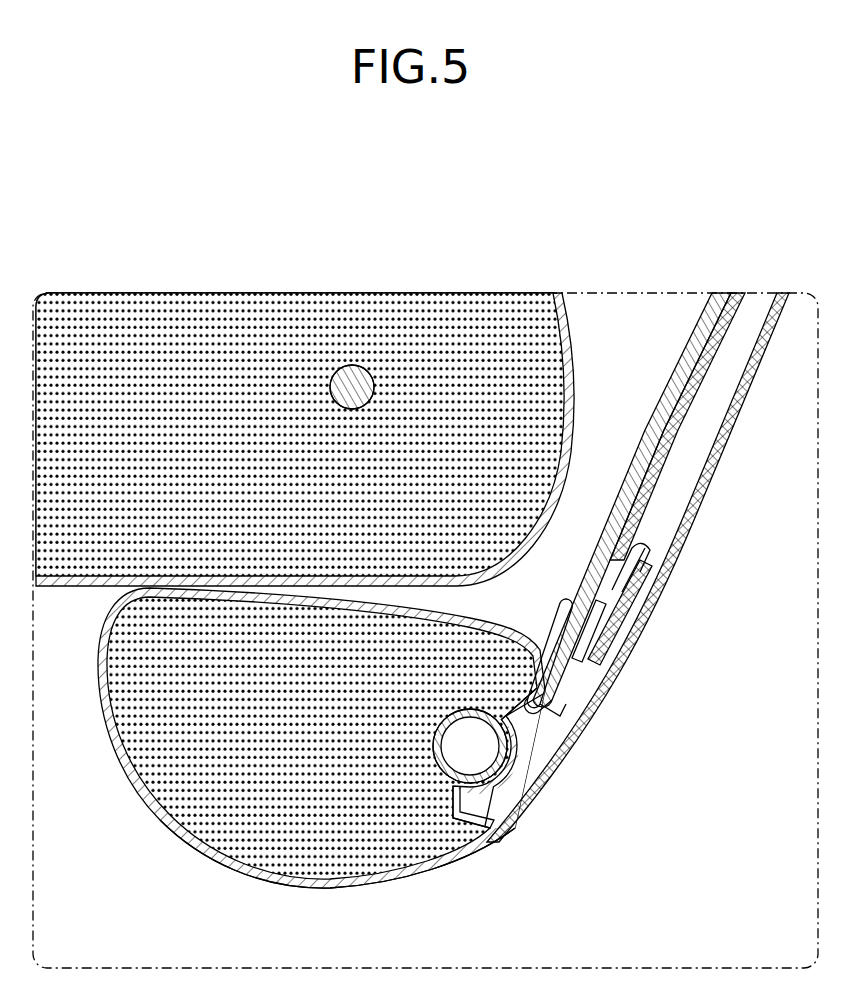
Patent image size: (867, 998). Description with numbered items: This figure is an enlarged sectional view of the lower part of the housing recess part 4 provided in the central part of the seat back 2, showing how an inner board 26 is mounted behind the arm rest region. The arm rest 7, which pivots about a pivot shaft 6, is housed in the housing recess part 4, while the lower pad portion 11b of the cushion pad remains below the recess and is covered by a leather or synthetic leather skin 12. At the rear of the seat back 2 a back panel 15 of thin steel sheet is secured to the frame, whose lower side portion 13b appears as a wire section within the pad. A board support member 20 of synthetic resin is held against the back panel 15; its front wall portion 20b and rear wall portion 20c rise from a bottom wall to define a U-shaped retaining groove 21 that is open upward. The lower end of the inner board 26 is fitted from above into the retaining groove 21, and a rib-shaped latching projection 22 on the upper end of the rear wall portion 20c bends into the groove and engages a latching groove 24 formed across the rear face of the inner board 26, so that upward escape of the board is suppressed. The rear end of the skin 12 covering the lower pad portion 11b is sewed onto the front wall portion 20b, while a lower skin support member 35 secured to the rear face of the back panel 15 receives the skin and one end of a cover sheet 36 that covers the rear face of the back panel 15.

The seat back 2 is at (207, 808).
The housing recess part 4 is at (604, 317).
The pivot shaft 6 is at (350, 365).
The arm rest 7 is at (297, 325).
The lower pad portion 11b is at (310, 715).
The skin 12 is at (348, 887).
The lower side portion 13b is at (507, 832).
The back panel 15 is at (745, 292).
The board support member 20 is at (560, 616).
The front wall portion 20b is at (556, 636).
The rear wall portion 20c is at (578, 698).
The retaining groove 21 is at (575, 692).
The latching projection 22 is at (596, 656).
The latching groove 24 is at (578, 664).
The inner board 26 is at (703, 320).
The lower skin support member 35 is at (640, 574).
The cover sheet 36 is at (783, 292).